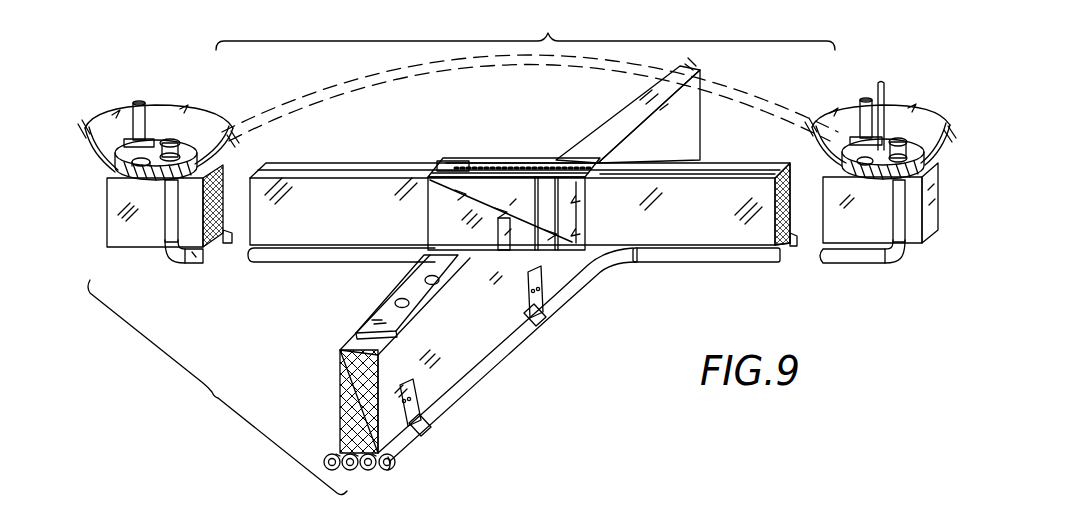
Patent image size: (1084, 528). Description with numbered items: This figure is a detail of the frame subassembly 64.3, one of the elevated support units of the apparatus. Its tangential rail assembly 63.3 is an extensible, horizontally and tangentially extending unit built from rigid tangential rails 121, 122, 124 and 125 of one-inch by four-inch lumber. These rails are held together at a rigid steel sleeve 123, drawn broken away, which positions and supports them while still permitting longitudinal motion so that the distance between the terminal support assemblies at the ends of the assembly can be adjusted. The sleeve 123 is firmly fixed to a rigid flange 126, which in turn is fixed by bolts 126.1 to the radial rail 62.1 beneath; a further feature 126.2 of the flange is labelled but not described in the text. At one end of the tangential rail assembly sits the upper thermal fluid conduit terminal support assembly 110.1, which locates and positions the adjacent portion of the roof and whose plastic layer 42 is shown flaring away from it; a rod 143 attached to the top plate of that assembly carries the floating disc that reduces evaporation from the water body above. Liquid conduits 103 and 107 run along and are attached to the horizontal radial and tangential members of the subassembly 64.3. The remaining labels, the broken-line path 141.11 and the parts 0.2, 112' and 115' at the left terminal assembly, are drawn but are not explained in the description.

The tangential rail assembly 63.3 is at (525, 29).
The light guide path 141.11 is at (742, 93).
The tangential rail 121 is at (307, 177).
The tangential rail 122 is at (347, 170).
The rigid steel sleeve 123 is at (441, 160).
The tangential rail 124 is at (710, 172).
The tangential rail 125 is at (745, 165).
The liquid conduit 103 is at (791, 233).
The liquid conduit 107 is at (727, 263).
The radial rail 62.1 is at (445, 333).
The rigid flange 126 is at (377, 315).
The bolts 126.1 is at (423, 280).
The plate hole 126.2 is at (393, 305).
The frame subassembly 64.3 is at (217, 387).
The layer 42 is at (207, 123).
The mounting disc 0.2 is at (127, 157).
The guide post 112' is at (123, 109).
The fastening nut 115' is at (193, 113).
The upper thermal fluid conduit terminal support assembly 110.1 is at (915, 153).
The rod 143 is at (881, 84).